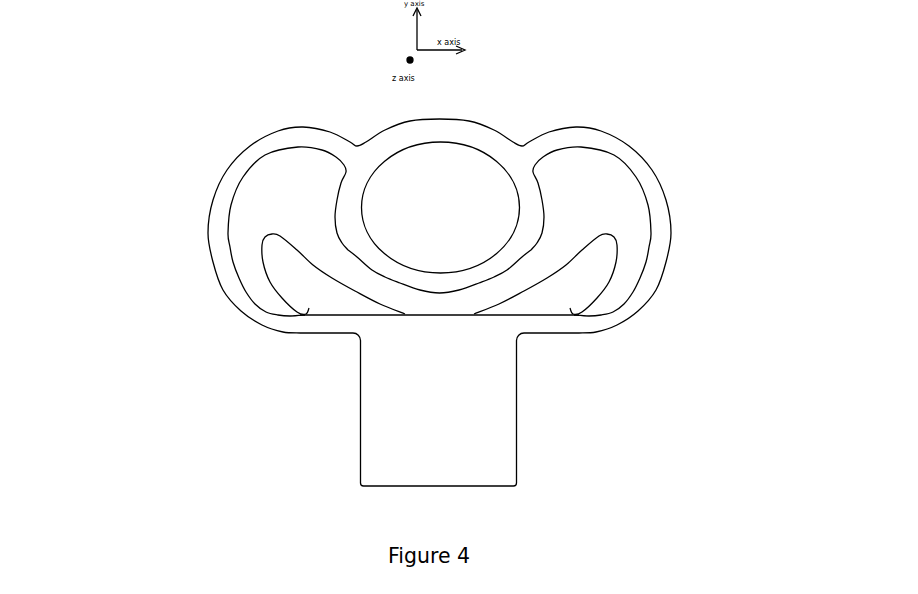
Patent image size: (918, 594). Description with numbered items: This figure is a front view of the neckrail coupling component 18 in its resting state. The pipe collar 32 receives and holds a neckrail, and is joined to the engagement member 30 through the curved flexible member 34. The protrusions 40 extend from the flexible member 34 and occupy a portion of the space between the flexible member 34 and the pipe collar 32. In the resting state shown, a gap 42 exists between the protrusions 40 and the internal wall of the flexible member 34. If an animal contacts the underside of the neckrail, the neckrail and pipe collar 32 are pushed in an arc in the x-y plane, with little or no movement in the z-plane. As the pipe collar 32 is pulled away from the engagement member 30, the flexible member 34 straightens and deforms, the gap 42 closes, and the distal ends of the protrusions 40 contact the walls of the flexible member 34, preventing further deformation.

The neckrail coupling component 18 is at (153, 78).
The engagement member 30 is at (498, 467).
The pipe collar 32 is at (477, 131).
The flexible member 34 is at (218, 208).
The protrusions 40 is at (283, 260).
The gap 42 is at (250, 235).